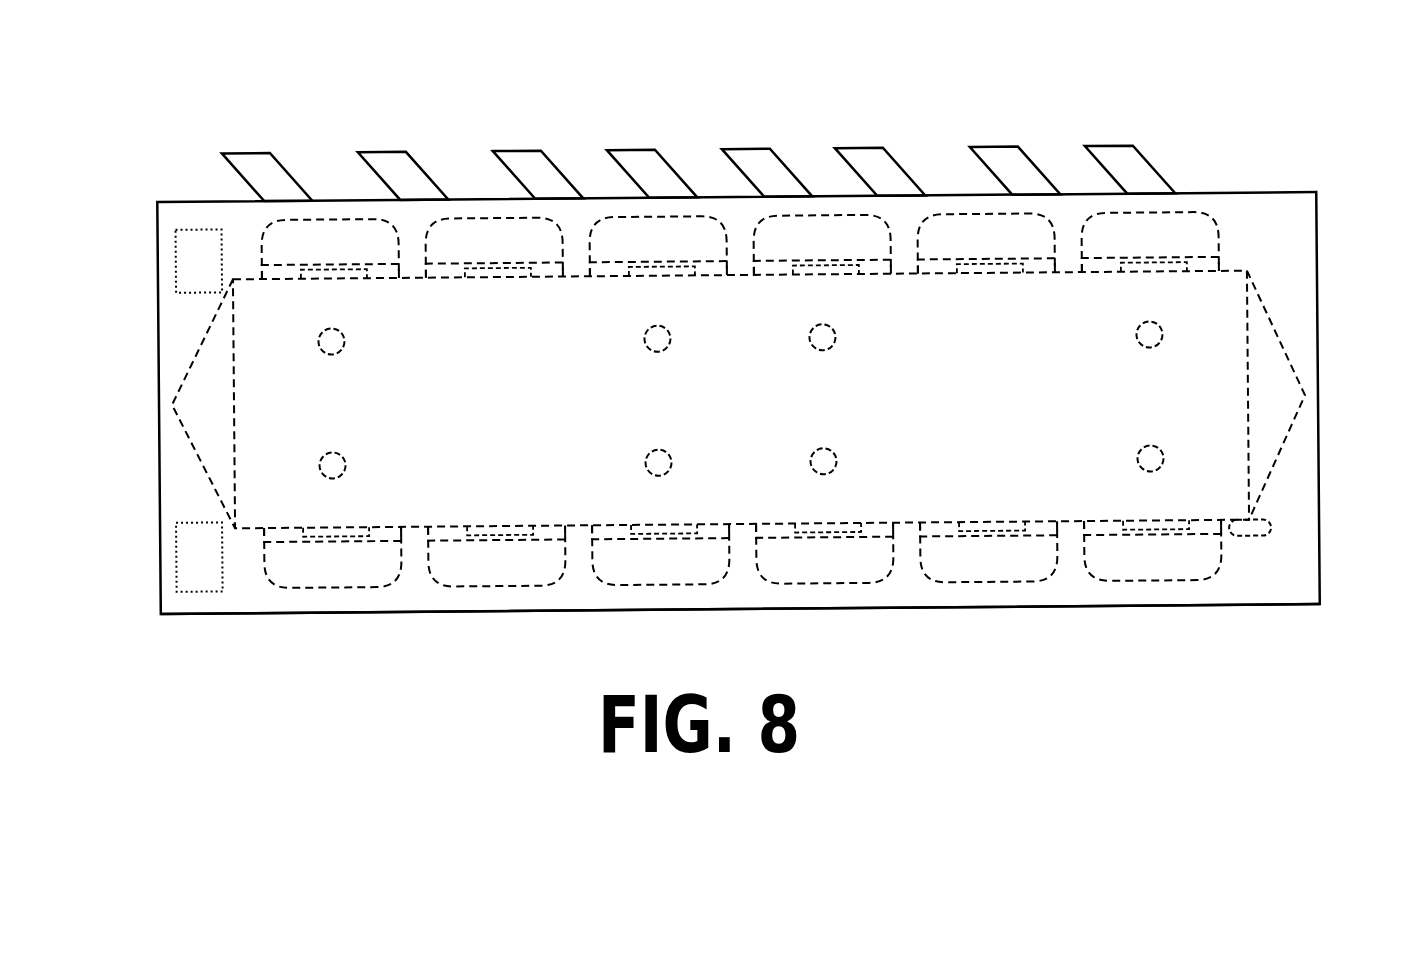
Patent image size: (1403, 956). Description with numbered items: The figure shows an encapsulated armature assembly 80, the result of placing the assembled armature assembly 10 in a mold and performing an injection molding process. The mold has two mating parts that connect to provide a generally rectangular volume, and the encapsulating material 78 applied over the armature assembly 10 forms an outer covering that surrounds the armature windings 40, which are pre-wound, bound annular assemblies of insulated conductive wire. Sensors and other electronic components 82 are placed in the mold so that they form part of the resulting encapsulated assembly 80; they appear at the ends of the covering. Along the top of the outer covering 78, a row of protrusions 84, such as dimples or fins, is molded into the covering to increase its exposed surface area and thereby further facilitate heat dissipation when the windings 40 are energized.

The armature assembly 10 is at (1281, 249).
The armature windings 40 is at (322, 578).
The encapsulating material 78 is at (238, 616).
The encapsulated armature assembly 80 is at (135, 153).
The electronic components 82 is at (195, 260).
The protrusions 84 is at (633, 150).